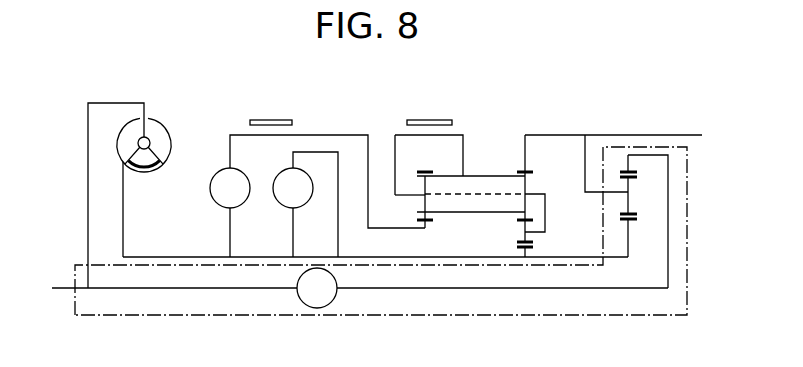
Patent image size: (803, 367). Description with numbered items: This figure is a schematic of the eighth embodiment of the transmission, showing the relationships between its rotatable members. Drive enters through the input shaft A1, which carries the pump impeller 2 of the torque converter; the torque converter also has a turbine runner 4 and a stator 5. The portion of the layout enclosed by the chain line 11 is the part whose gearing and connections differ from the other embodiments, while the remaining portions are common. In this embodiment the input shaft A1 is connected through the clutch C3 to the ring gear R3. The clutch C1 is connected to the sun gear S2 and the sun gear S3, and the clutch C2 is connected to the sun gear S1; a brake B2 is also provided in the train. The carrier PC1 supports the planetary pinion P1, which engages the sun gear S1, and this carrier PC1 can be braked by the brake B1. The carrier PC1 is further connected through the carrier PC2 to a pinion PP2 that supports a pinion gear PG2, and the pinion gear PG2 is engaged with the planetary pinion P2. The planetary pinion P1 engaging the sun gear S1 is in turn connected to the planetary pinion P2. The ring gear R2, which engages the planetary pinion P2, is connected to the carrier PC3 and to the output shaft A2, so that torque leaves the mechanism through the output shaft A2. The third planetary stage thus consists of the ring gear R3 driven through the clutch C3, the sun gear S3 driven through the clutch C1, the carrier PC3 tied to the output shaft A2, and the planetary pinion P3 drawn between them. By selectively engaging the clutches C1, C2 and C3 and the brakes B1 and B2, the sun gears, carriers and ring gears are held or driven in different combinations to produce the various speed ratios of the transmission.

The pump impeller 2 is at (170, 152).
The turbine runner 4 is at (115, 153).
The stator 5 is at (145, 172).
The chain line 11 is at (687, 288).
The input shaft A1 is at (67, 290).
The output shaft A2 is at (622, 133).
The clutch C1 is at (305, 204).
The clutch C2 is at (317, 196).
The clutch C3 is at (317, 288).
The brake B1 is at (429, 143).
The brake B2 is at (271, 108).
The carrier PC1 is at (396, 198).
The planetary pinion P1 is at (428, 197).
The sun gear S1 is at (432, 224).
The ring gear R2 is at (525, 150).
The planetary pinion P2 is at (528, 185).
The sun gear S2 is at (523, 252).
The carrier PC2 is at (533, 196).
The pinion gear PG2 is at (522, 222).
The pinion PP2 is at (545, 232).
The ring gear R3 is at (650, 156).
The planetary pinion P3 is at (628, 190).
The carrier PC3 is at (610, 203).
The sun gear S3 is at (628, 242).